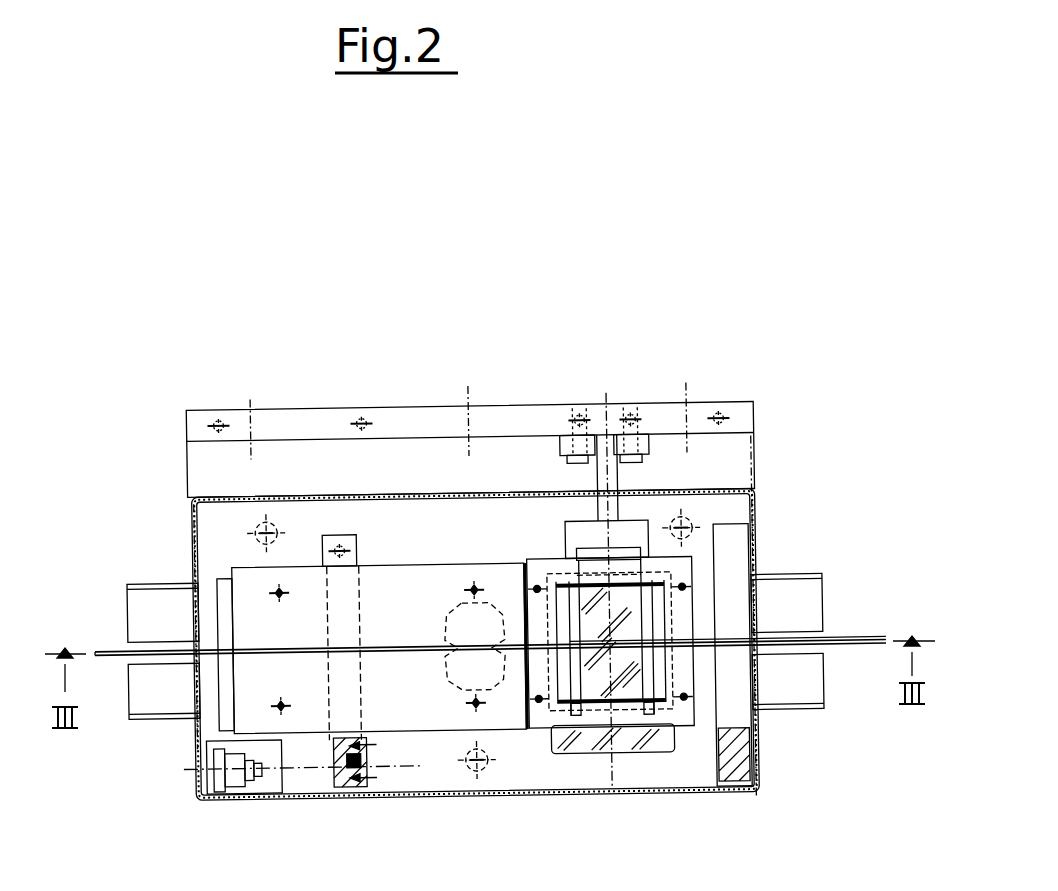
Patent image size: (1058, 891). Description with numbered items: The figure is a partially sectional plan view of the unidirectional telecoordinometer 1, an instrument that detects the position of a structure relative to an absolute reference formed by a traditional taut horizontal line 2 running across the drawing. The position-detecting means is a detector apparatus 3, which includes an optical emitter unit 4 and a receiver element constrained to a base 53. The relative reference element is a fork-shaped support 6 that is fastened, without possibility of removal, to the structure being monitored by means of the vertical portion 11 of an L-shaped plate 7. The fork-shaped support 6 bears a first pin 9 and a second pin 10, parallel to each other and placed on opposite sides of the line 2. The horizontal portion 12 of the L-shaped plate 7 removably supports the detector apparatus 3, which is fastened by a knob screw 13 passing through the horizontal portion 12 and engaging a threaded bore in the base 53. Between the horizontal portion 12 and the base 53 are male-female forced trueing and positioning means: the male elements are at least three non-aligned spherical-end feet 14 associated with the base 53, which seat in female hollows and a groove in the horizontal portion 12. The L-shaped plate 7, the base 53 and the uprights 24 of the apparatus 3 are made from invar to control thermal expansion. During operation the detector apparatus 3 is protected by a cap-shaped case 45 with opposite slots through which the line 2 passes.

The unidirectional telecoordinometer 1 is at (170, 250).
The taut horizontal line 2 is at (102, 645).
The detector apparatus 3 is at (704, 784).
The optical emitter unit 4 is at (511, 720).
The fork-shaped support 6 is at (637, 542).
The L-shaped plate 7 is at (412, 426).
The first pin 9 is at (588, 580).
The second pin 10 is at (597, 727).
The vertical portion 11 is at (522, 412).
The horizontal portion 12 is at (290, 462).
The knob screw 13 is at (490, 560).
The spherical-end feet 14 is at (292, 531).
The uprights 24 is at (342, 790).
The cap-shaped case 45 is at (757, 514).
The base 53 is at (410, 782).